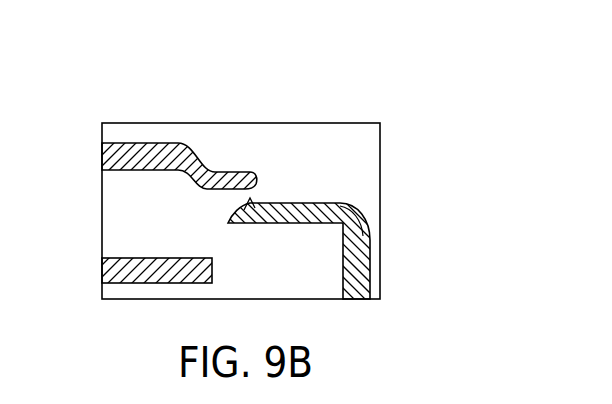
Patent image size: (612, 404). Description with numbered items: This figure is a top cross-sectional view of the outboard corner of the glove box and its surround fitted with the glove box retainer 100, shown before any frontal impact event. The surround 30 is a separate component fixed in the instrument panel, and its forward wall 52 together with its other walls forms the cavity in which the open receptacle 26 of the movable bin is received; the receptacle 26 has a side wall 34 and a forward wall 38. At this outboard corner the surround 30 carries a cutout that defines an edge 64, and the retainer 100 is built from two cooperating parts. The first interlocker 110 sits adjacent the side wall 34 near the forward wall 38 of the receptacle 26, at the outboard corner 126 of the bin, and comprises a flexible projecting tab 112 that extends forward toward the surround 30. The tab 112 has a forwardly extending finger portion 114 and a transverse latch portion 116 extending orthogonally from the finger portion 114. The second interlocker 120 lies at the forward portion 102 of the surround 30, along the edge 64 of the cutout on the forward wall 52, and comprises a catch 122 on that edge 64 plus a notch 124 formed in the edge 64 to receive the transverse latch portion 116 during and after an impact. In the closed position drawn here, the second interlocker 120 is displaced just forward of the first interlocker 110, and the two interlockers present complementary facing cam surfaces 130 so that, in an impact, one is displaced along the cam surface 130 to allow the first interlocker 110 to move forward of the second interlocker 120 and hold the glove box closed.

The glove box retainer 100 is at (350, 100).
The surround 30 is at (140, 150).
The forward portion 102 is at (167, 150).
The second interlocker 120 is at (204, 156).
The notch 124 is at (237, 169).
The edge 64 is at (258, 186).
The cam surface 130 is at (246, 190).
The catch 122 is at (213, 190).
The forward wall 52 is at (102, 155).
The open receptacle 26 is at (123, 270).
The forward wall 38 is at (152, 272).
The first interlocker 110 is at (352, 213).
The outboard corner 126 is at (338, 205).
The flexible projecting tab 112 is at (358, 236).
The side wall 34 is at (358, 283).
The forwardly extending finger portion 114 is at (353, 298).
The transverse latch portion 116 is at (286, 224).